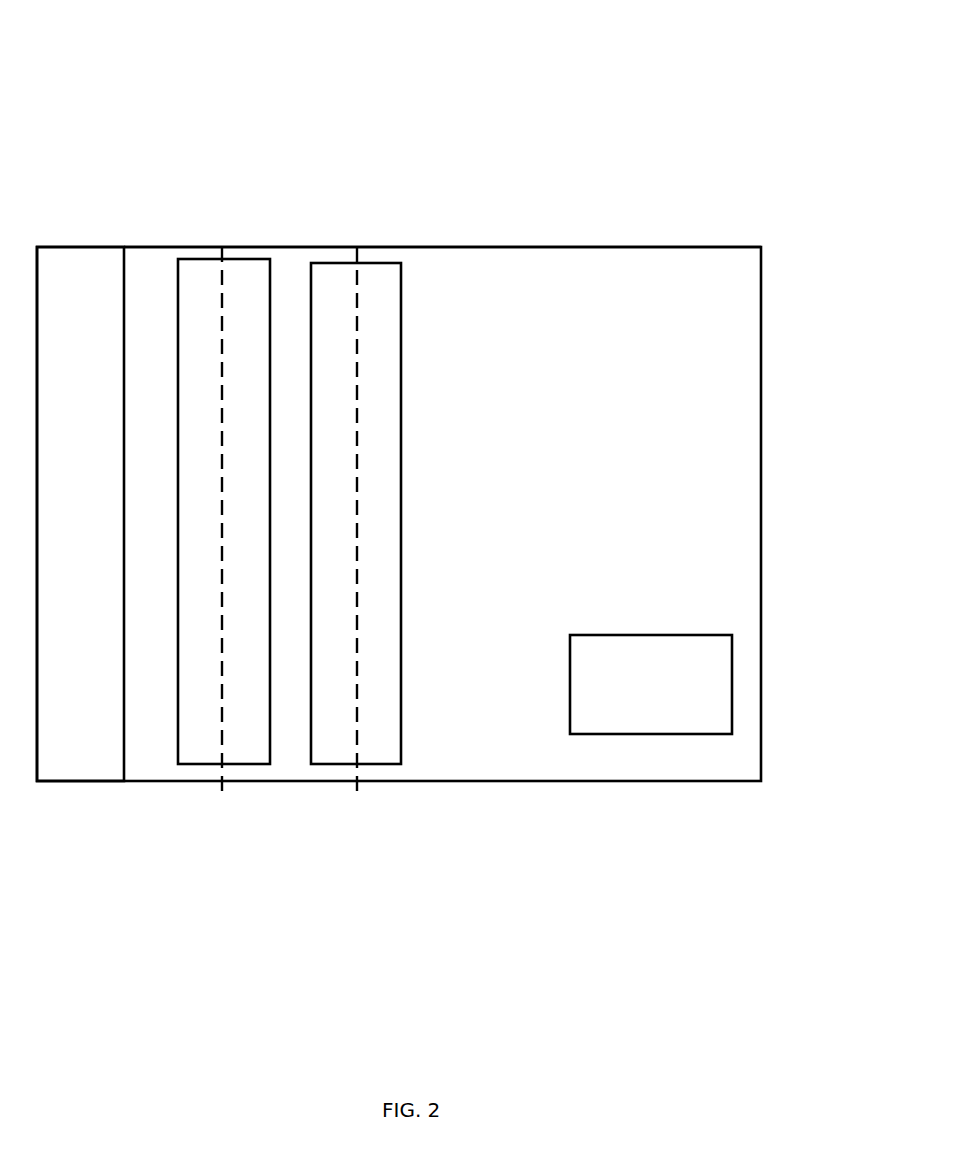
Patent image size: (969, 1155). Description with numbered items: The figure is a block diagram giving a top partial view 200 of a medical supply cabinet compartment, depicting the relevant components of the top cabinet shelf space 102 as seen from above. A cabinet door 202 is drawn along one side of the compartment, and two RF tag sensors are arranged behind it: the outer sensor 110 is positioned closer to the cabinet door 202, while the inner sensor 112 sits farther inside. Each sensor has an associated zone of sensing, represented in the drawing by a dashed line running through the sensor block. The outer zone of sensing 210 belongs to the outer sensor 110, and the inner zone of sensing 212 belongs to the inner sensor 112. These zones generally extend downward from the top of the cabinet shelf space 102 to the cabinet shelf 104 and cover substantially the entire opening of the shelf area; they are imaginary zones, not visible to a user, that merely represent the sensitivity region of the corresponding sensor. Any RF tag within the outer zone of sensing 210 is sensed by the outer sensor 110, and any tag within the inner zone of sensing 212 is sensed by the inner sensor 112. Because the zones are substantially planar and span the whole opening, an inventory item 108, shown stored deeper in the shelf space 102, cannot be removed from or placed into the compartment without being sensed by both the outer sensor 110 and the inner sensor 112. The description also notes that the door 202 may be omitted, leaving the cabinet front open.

The top partial view 200 is at (232, 100).
The cabinet shelf space 102 is at (742, 455).
The cabinet shelf 104 is at (632, 263).
The cabinet door 202 is at (82, 785).
The outer sensor 110 is at (253, 263).
The inner sensor 112 is at (395, 260).
The outer zone of sensing 210 is at (224, 797).
The inner zone of sensing 212 is at (360, 798).
The inventory item 108 is at (733, 717).